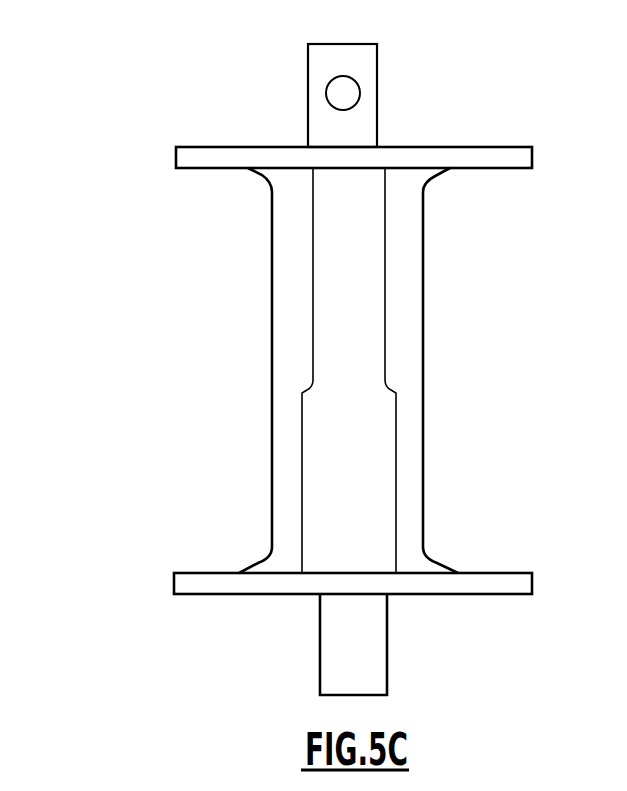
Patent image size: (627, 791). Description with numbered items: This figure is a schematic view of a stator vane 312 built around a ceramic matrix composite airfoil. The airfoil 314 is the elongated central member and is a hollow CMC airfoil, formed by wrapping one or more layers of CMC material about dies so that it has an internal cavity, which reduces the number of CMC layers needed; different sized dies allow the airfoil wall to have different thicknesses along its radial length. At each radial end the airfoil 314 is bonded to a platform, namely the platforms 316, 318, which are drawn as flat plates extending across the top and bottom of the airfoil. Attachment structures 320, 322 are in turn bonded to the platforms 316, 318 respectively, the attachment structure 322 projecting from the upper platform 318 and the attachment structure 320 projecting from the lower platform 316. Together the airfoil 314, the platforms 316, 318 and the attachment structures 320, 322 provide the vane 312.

The vane 312 is at (386, 359).
The airfoil 314 is at (407, 353).
The platform 316 is at (487, 582).
The platform 318 is at (482, 158).
The attachment structure 320 is at (382, 650).
The attachment structure 322 is at (365, 57).